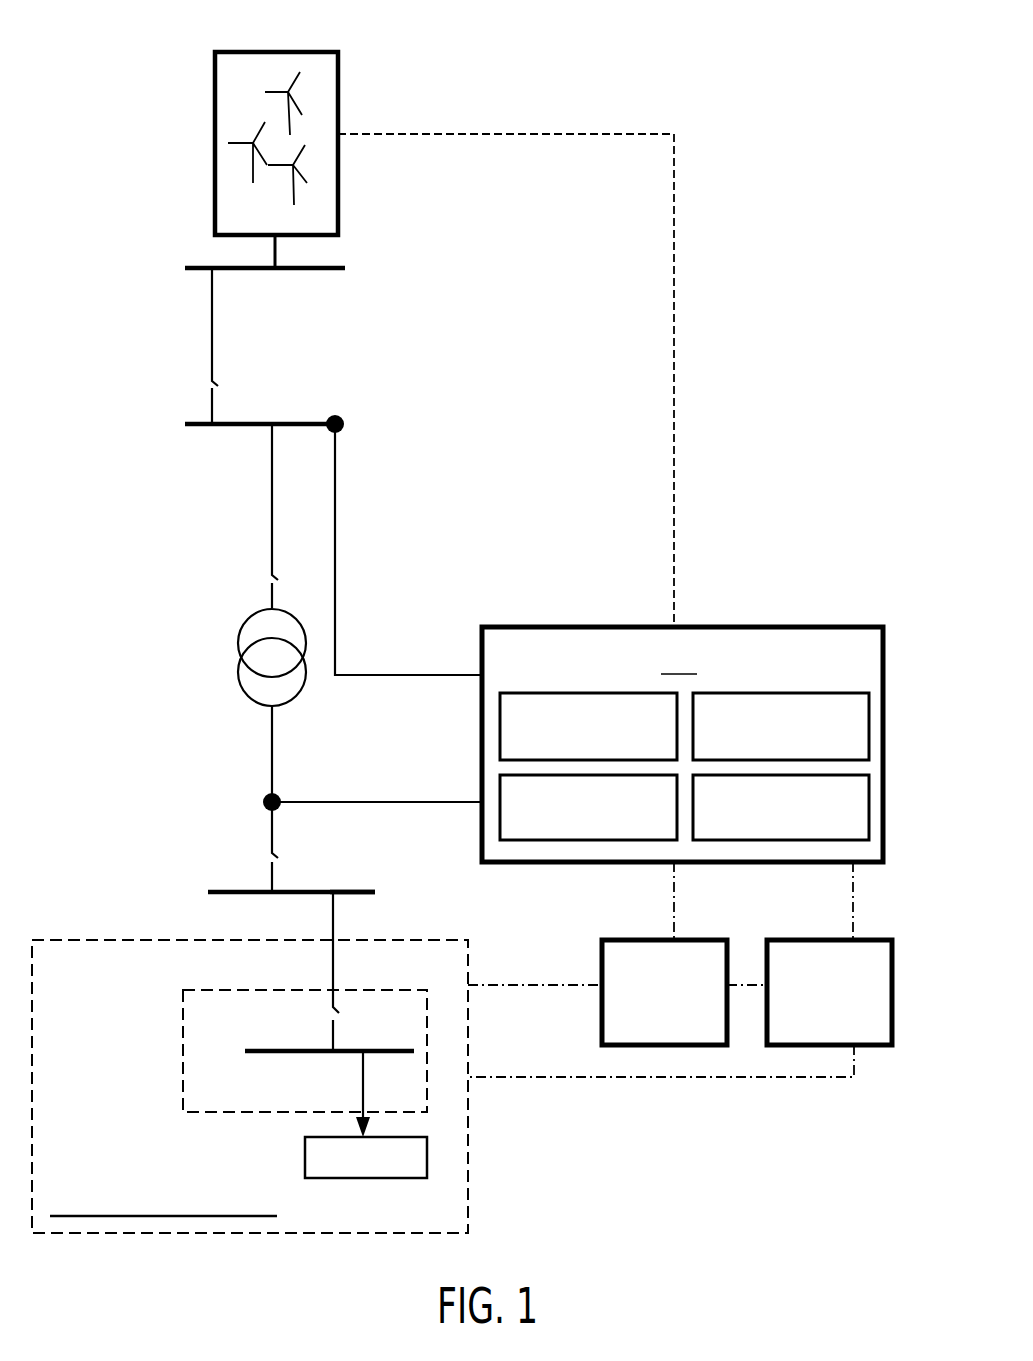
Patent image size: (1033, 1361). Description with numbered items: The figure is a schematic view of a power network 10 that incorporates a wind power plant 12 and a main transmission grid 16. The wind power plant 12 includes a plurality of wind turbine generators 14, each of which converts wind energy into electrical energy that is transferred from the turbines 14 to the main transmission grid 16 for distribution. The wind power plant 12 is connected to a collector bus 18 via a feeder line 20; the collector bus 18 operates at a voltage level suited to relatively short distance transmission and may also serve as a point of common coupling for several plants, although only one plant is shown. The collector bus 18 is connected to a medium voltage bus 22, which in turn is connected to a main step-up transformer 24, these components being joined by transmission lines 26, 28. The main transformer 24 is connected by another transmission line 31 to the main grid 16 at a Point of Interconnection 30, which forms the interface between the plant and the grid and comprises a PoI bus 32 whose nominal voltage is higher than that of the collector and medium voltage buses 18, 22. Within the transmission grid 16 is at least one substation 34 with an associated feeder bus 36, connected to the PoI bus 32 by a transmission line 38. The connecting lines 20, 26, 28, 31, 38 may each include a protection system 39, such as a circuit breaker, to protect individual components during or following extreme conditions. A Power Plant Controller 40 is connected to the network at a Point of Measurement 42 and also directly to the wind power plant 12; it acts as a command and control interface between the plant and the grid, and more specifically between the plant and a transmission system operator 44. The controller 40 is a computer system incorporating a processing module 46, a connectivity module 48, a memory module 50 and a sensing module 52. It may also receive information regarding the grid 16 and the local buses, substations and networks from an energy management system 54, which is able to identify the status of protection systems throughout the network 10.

The power network 10 is at (740, 190).
The wind power plant 12 is at (340, 83).
The wind turbine generators 14 is at (243, 60).
The main transmission grid 16 is at (63, 937).
The collector bus 18 is at (340, 265).
The feeder line 20 is at (272, 252).
The medium voltage bus 22 is at (314, 422).
The main step-up transformer 24 is at (240, 633).
The transmission line 26 is at (214, 316).
The transmission line 28 is at (270, 464).
The Point of Interconnection 30 is at (192, 890).
The transmission line 31 is at (270, 730).
The PoI bus 32 is at (340, 890).
The substation 34 is at (180, 1048).
The feeder bus 36 is at (265, 1048).
The transmission line 38 is at (335, 950).
The protection system 39 is at (240, 384).
The Power Plant Controller 40 is at (886, 662).
The Point of Measurement 42 is at (248, 800).
The transmission system operator 44 is at (600, 960).
The processing module 46 is at (576, 692).
The connectivity module 48 is at (780, 692).
The memory module 50 is at (524, 841).
The sensing module 52 is at (870, 811).
The energy management system 54 is at (894, 996).